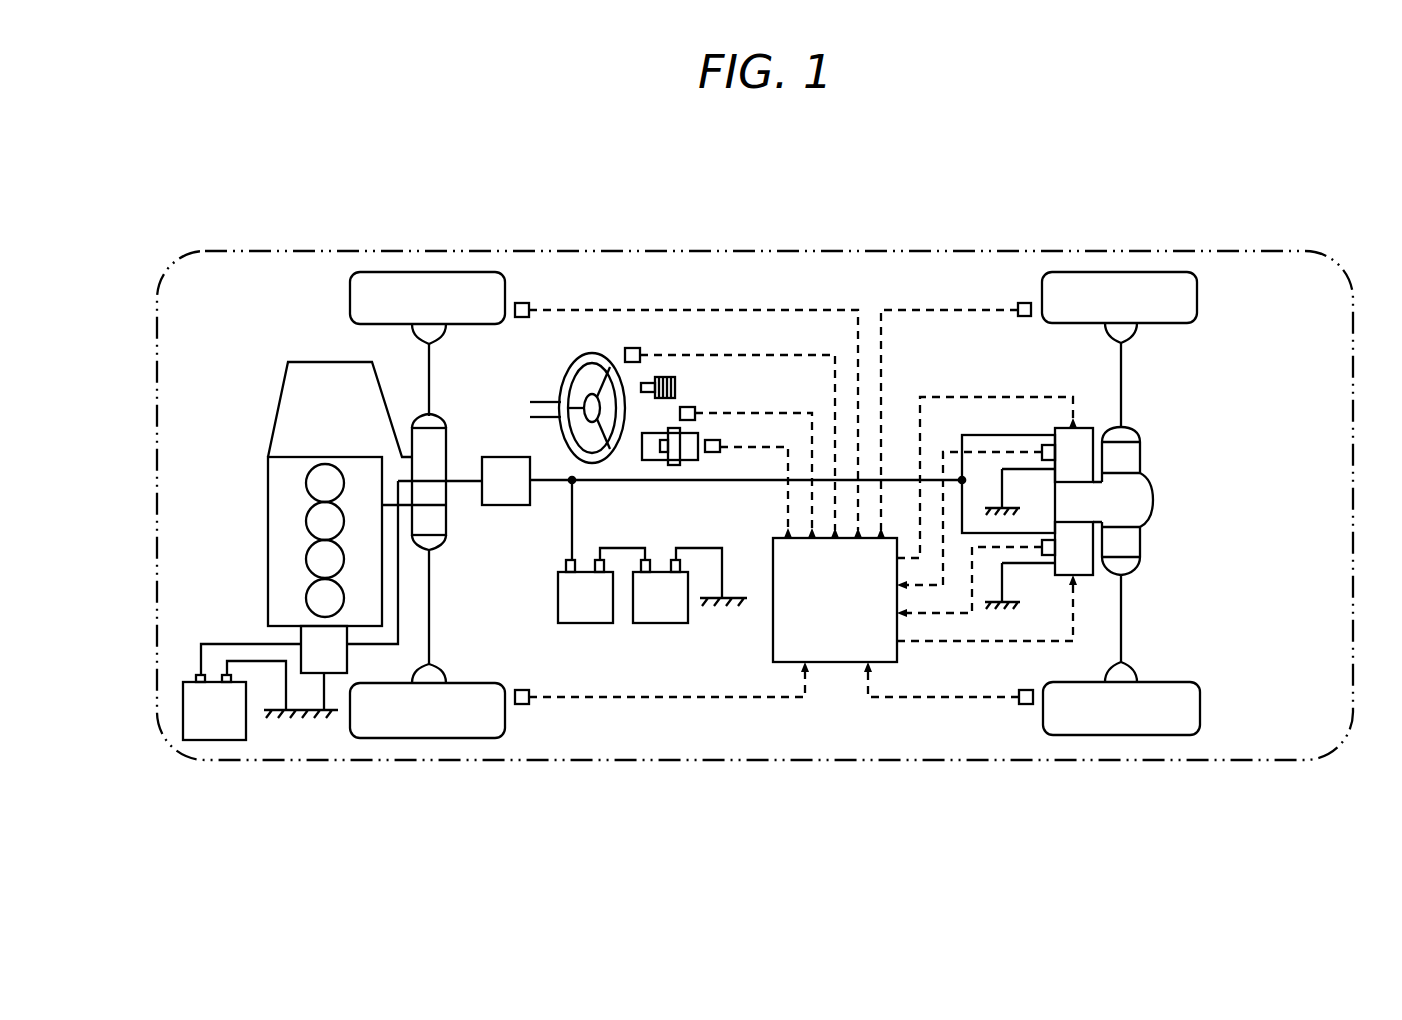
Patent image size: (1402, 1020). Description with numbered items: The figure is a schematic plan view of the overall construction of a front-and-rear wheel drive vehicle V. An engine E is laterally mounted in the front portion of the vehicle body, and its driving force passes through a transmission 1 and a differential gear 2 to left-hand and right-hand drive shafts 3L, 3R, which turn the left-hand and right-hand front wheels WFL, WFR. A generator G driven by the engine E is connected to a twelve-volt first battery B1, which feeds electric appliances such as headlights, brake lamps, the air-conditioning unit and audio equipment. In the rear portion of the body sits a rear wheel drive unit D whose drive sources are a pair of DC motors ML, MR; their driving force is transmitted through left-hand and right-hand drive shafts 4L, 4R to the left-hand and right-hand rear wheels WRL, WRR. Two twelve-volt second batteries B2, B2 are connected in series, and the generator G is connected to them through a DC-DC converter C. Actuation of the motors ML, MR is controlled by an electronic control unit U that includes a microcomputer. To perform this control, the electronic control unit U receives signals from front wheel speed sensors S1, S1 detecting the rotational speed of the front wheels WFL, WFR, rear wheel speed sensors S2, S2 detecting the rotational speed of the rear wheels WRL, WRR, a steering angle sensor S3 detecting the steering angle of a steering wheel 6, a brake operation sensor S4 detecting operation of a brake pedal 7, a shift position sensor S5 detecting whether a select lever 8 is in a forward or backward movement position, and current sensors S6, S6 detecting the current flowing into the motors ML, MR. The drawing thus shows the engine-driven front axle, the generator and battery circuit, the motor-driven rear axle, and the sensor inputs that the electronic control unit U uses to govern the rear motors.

The vehicle V is at (837, 233).
The transmission 1 is at (309, 494).
The engine E is at (273, 548).
The differential gear 2 is at (440, 470).
The right-hand drive shaft 3R is at (435, 377).
The left-hand drive shaft 3L is at (432, 652).
The right-hand drive shaft 4R is at (1127, 385).
The left-hand drive shaft 4L is at (1127, 640).
The steering wheel 6 is at (568, 374).
The brake pedal 7 is at (676, 377).
The select lever 8 is at (672, 465).
The generator G is at (334, 667).
The DC-DC converter C is at (516, 498).
The electronic control unit U is at (846, 617).
The rear wheel drive unit D is at (1131, 518).
The first battery B1 is at (212, 729).
The second battery B2 is at (660, 615).
The front wheel speed sensor S1 is at (523, 303).
The rear wheel speed sensor S2 is at (990, 737).
The steering angle sensor S3 is at (632, 348).
The brake operation sensor S4 is at (690, 407).
The shift position sensor S5 is at (713, 440).
The current sensor S6 is at (1040, 600).
The right-hand motor MR is at (1082, 440).
The left-hand motor ML is at (1082, 565).
The right-hand front wheel WFR is at (400, 283).
The left-hand front wheel WFL is at (400, 722).
The right-hand rear wheel WRR is at (1120, 283).
The left-hand rear wheel WRL is at (1128, 720).